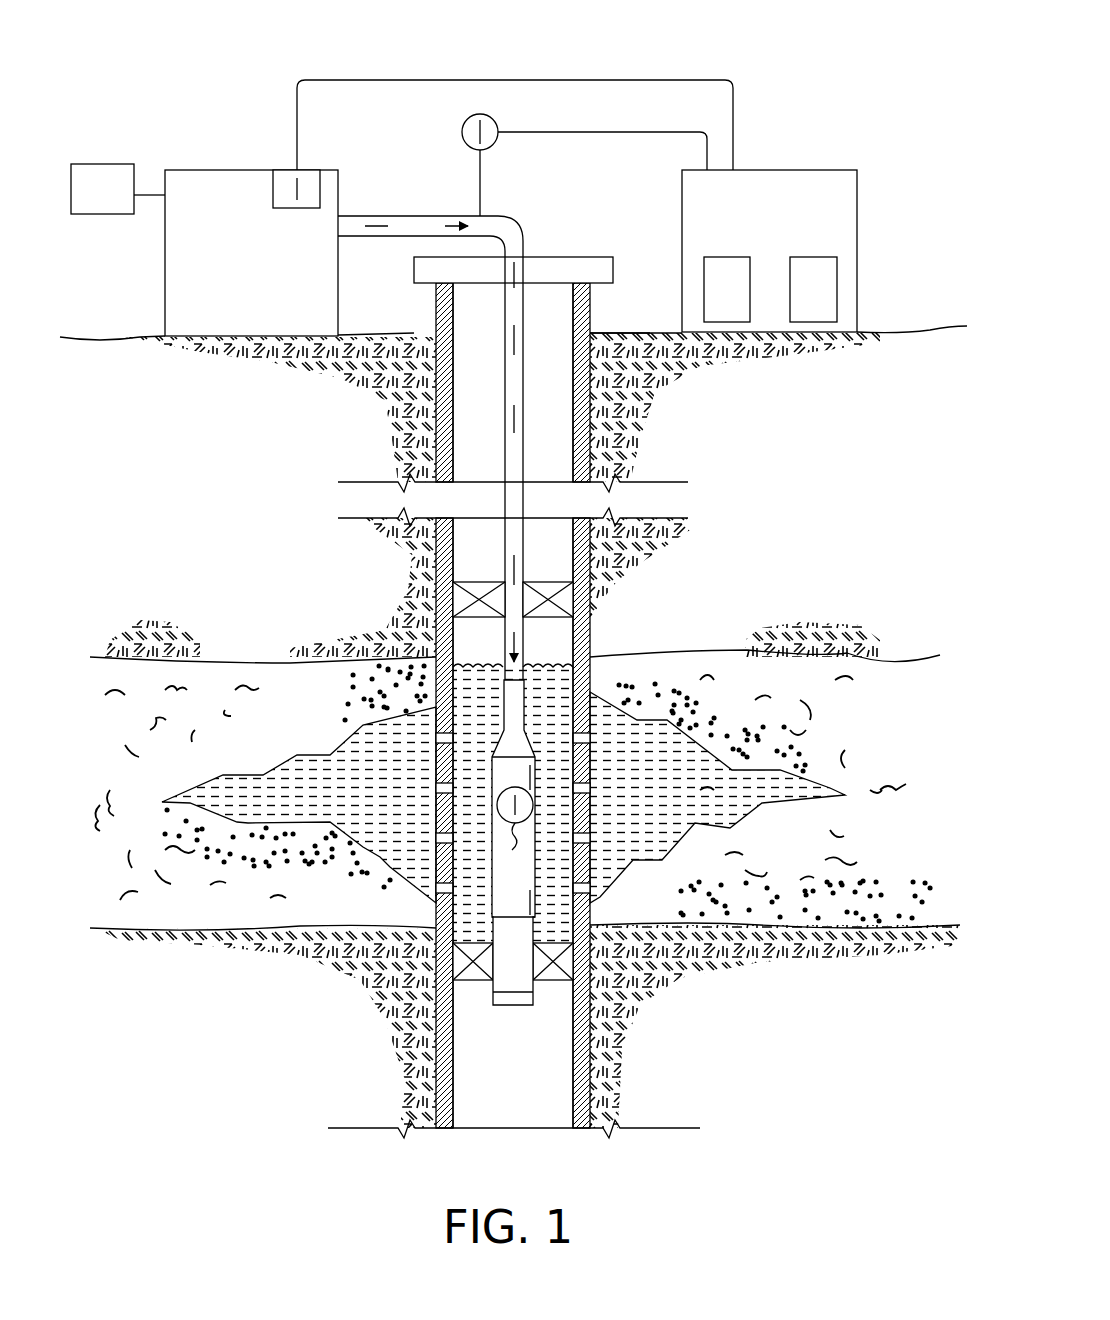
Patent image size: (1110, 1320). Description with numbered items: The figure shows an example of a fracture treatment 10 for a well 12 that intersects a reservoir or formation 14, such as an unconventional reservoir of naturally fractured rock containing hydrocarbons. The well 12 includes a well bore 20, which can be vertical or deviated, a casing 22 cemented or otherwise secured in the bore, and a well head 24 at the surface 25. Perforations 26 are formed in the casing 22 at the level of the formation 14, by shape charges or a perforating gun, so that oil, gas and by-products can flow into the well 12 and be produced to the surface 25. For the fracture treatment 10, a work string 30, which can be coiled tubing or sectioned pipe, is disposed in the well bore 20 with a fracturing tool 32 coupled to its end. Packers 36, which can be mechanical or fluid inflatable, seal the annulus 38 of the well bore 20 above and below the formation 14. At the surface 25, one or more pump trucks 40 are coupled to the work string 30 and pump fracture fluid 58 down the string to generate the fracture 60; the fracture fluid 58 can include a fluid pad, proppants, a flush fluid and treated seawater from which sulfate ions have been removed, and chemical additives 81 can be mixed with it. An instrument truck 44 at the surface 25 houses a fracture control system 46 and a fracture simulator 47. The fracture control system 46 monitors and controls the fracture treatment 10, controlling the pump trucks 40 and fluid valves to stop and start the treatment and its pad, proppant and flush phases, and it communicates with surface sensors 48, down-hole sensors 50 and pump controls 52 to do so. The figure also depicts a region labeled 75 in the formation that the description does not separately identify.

The fracture treatment 10 is at (755, 78).
The well 12 is at (550, 212).
The formation 14 is at (888, 733).
The well bore 20 is at (572, 378).
The casing 22 is at (453, 420).
The well head 24 is at (600, 257).
The surface 25 is at (650, 333).
The perforations 26 is at (436, 737).
The work string 30 is at (523, 548).
The fracturing tool 32 is at (503, 1014).
The packers 36 is at (548, 617).
The annulus 38 is at (567, 445).
The pump trucks 40 is at (205, 168).
The instrument truck 44 is at (820, 170).
The fracture control system 46 is at (743, 305).
The fracture simulator 47 is at (830, 305).
The surface sensors 48 is at (462, 137).
The down-hole sensors 50 is at (515, 837).
The pump controls 52 is at (272, 190).
The fracture fluid 58 is at (385, 222).
The fracture 60 is at (268, 772).
The fracturing fluid 75 is at (128, 814).
The chemical additives 81 is at (119, 202).